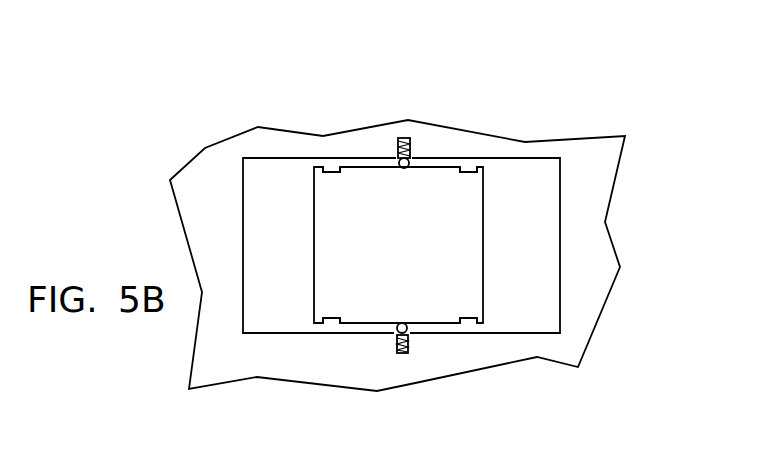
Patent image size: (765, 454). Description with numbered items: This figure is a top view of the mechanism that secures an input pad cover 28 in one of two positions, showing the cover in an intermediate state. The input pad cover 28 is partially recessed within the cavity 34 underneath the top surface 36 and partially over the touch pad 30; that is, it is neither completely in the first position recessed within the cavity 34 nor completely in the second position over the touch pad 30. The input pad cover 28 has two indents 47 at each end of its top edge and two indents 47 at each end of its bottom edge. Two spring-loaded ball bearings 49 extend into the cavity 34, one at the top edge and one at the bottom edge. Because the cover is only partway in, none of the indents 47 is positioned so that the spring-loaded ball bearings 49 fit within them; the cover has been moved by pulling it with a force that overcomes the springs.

The input pad cover 28 is at (442, 307).
The touch pad 30 is at (522, 193).
The cavity 34 is at (278, 180).
The top surface 36 is at (300, 363).
The indents 47 is at (328, 175).
The spring-loaded ball bearings 49 is at (403, 138).